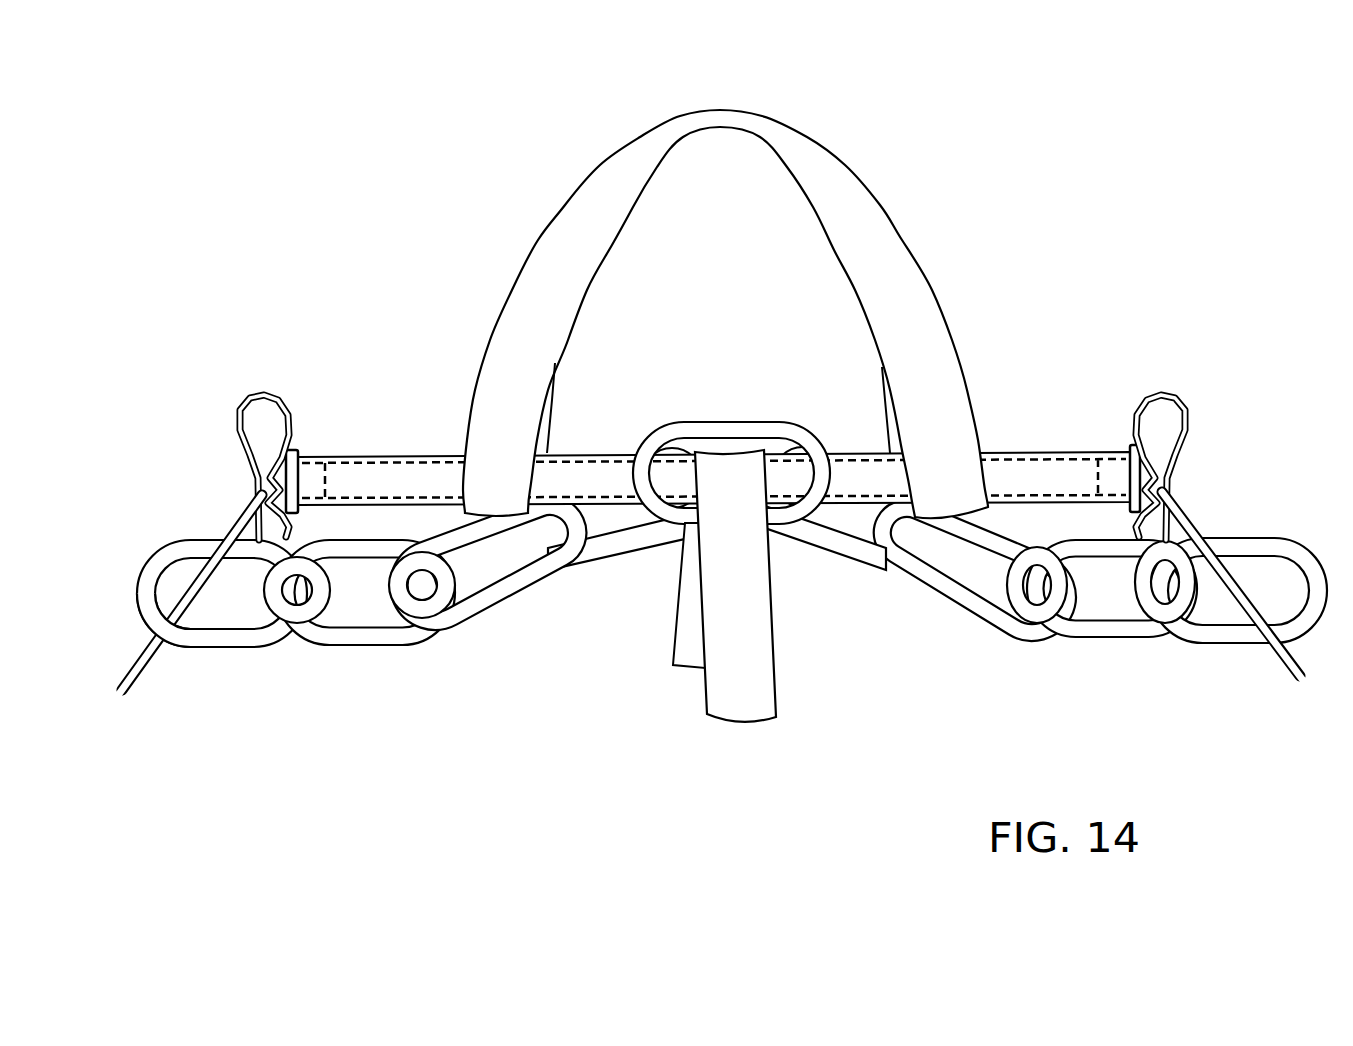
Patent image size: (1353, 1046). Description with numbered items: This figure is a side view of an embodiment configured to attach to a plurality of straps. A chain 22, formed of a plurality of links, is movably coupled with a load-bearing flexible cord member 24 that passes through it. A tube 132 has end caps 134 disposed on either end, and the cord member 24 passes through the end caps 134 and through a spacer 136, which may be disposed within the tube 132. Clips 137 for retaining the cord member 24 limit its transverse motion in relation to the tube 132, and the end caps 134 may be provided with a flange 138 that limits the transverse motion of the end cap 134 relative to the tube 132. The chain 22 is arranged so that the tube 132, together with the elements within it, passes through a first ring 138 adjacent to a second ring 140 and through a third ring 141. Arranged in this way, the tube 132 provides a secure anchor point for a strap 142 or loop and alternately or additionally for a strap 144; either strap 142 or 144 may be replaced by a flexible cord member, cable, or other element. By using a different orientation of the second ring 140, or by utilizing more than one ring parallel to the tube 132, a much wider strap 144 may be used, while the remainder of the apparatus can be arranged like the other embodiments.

The chain 22 is at (1247, 537).
The flexible cord member 24 is at (245, 508).
The tube 132 is at (1053, 447).
The end caps 134 is at (288, 450).
The spacer 136 is at (1178, 397).
The clips 137 is at (252, 397).
The first ring 138 is at (578, 568).
The second ring 140 is at (697, 420).
The third ring 141 is at (840, 556).
The strap 142 is at (888, 217).
The strap 144 is at (750, 725).